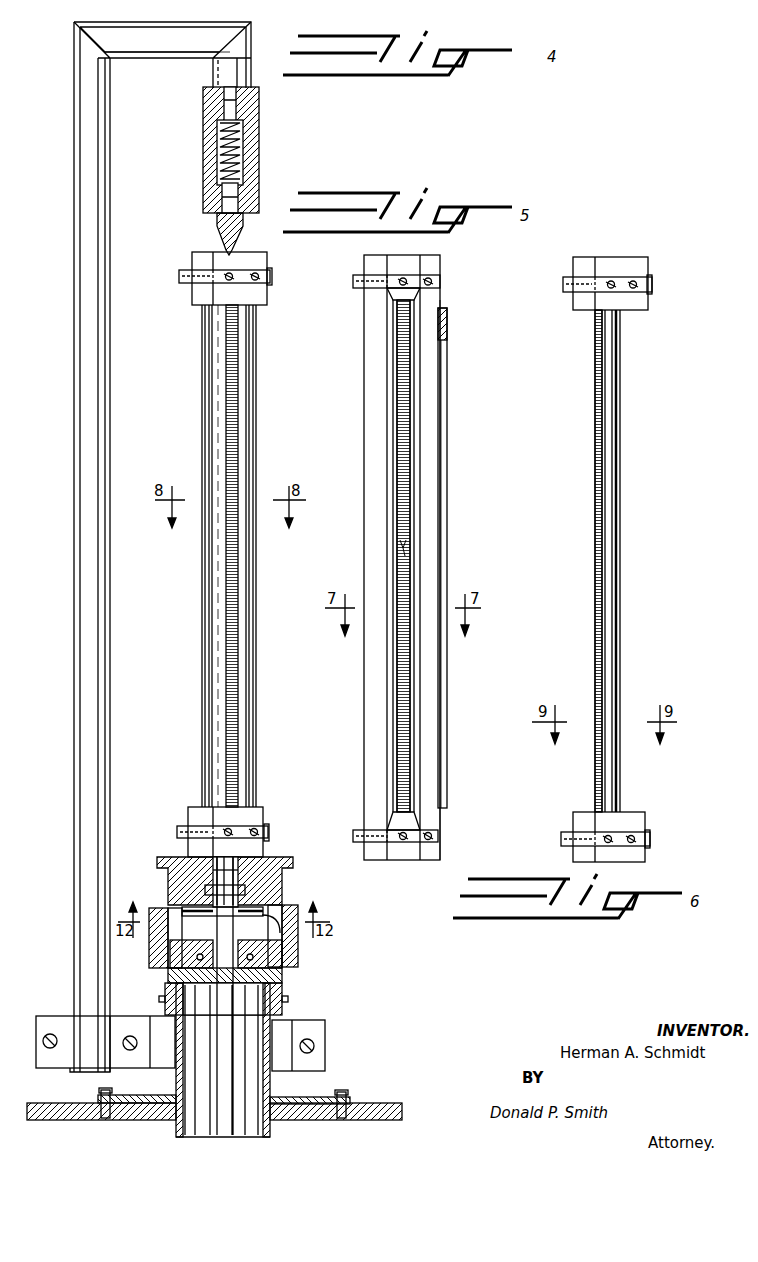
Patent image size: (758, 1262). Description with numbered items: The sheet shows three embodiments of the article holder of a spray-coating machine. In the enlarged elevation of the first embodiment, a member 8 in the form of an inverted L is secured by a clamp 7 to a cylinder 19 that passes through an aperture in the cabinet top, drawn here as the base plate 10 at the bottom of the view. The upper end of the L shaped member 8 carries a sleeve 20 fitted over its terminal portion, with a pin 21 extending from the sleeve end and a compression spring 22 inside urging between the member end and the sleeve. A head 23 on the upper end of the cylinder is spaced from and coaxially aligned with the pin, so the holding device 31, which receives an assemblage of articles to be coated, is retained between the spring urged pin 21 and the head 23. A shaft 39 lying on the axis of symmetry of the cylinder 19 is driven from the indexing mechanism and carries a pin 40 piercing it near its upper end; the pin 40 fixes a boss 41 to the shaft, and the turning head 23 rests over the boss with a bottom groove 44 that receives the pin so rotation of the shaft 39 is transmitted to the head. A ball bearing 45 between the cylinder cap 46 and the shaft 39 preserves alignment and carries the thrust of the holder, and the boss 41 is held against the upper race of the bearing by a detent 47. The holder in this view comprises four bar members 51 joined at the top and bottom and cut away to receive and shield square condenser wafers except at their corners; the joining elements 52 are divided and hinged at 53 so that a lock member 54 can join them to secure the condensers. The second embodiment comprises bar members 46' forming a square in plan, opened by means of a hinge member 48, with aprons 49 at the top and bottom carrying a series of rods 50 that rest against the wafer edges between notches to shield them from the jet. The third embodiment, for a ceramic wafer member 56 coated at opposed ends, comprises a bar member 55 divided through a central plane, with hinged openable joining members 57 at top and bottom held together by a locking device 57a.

In FIG. 4, the clamp 7 is at (36, 1035).
In FIG. 4, the L shaped member 8 is at (74, 447).
In FIG. 4, the base plate 10 is at (380, 1106).
In FIG. 4, the cylinder 19 is at (176, 1074).
In FIG. 4, the sleeve 20 is at (262, 156).
In FIG. 4, the pin 21 is at (224, 246).
In FIG. 4, the compression spring 22 is at (205, 147).
In FIG. 4, the head 23 is at (284, 858).
In FIG. 4, the holding device 31 is at (268, 436).
In FIG. 4, the shaft 39 is at (232, 1093).
In FIG. 4, the pin 40 is at (262, 905).
In FIG. 4, the boss 41 is at (245, 890).
In FIG. 4, the bottom groove 44 is at (156, 908).
In FIG. 4, the ball bearing 45 is at (283, 975).
In FIG. 4, the cylinder cap 46 is at (205, 996).
In FIG. 5, the cylinder cap 46 is at (383, 557).
In FIG. 5, the bar members 46' is at (455, 580).
In FIG. 4, the detent 47 is at (298, 953).
In FIG. 5, the detent 47 is at (353, 284).
In FIG. 5, the hinge member 48 is at (447, 470).
In FIG. 5, the aprons 49 is at (420, 297).
In FIG. 5, the rods 50 is at (398, 500).
In FIG. 4, the bar members 51 is at (202, 406).
In FIG. 4, the joining elements 52 is at (267, 266).
In FIG. 4, the hinge 53 is at (273, 280).
In FIG. 4, the lock member 54 is at (178, 282).
In FIG. 6, the bar member 55 is at (600, 393).
In FIG. 6, the ceramic wafer member 56 is at (595, 500).
In FIG. 6, the joining members 57 is at (640, 258).
In FIG. 6, the locking device 57a is at (563, 280).